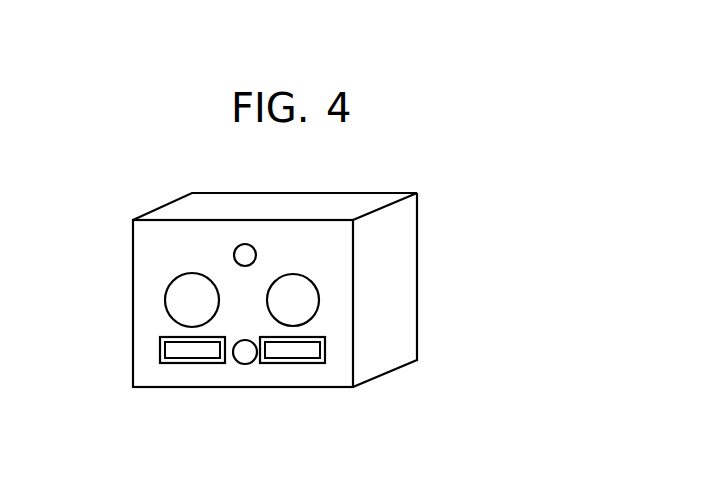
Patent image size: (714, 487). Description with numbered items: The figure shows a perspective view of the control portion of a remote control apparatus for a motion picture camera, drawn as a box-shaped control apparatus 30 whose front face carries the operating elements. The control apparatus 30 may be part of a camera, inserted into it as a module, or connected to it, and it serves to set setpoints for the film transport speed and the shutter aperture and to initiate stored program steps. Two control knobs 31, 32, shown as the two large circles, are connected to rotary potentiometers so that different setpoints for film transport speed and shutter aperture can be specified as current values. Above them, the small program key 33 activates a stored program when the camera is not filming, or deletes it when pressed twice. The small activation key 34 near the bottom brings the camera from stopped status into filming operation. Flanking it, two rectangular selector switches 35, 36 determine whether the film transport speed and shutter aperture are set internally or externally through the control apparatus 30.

The control apparatus 30 is at (443, 243).
The control knob 31 is at (185, 302).
The control knob 32 is at (305, 302).
The program key 33 is at (249, 252).
The activation key 34 is at (243, 355).
The selector switch 35 is at (183, 353).
The selector switch 36 is at (305, 353).